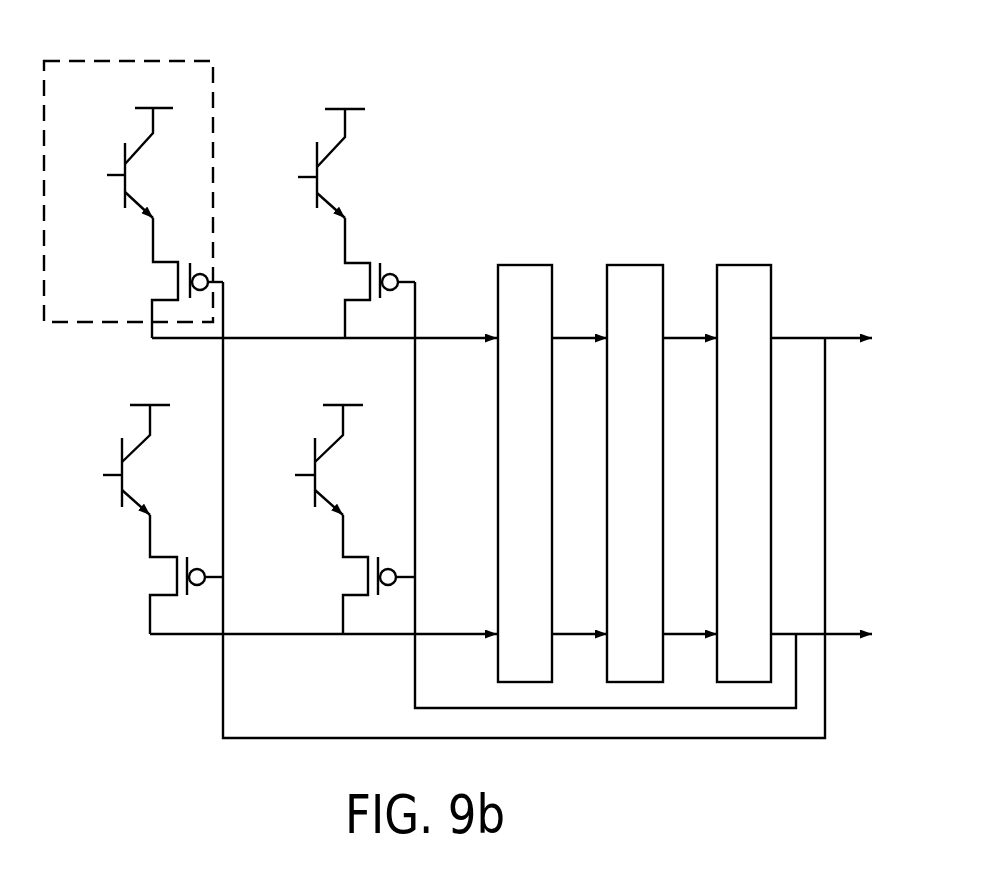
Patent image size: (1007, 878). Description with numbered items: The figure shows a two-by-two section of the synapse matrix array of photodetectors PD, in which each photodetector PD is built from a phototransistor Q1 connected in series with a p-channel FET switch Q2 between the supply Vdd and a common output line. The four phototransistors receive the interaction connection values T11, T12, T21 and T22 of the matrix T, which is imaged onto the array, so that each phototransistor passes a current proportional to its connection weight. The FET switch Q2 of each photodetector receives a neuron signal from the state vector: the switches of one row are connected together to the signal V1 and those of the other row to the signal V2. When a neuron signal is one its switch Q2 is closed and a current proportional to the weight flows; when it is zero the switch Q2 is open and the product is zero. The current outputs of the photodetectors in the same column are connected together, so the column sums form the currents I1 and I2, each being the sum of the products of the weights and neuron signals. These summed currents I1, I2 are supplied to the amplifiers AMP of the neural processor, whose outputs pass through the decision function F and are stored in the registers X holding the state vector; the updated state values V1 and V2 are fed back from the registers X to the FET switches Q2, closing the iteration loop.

The photodetector PD is at (123, 58).
The supply voltage Vdd is at (247, 245).
The interaction connection value T11 is at (127, 223).
The interaction connection value T12 is at (338, 223).
The interaction connection value T21 is at (145, 519).
The interaction connection value T22 is at (332, 519).
The phototransistor Q1 is at (154, 179).
The p-channel FET switch Q2 is at (175, 280).
The summed current I1 is at (324, 359).
The summed current I2 is at (323, 657).
The amplifiers AMP is at (552, 458).
The decision function F is at (662, 458).
The state vector registers X is at (744, 458).
The neuron signal V1 is at (836, 342).
The neuron signal V2 is at (835, 643).